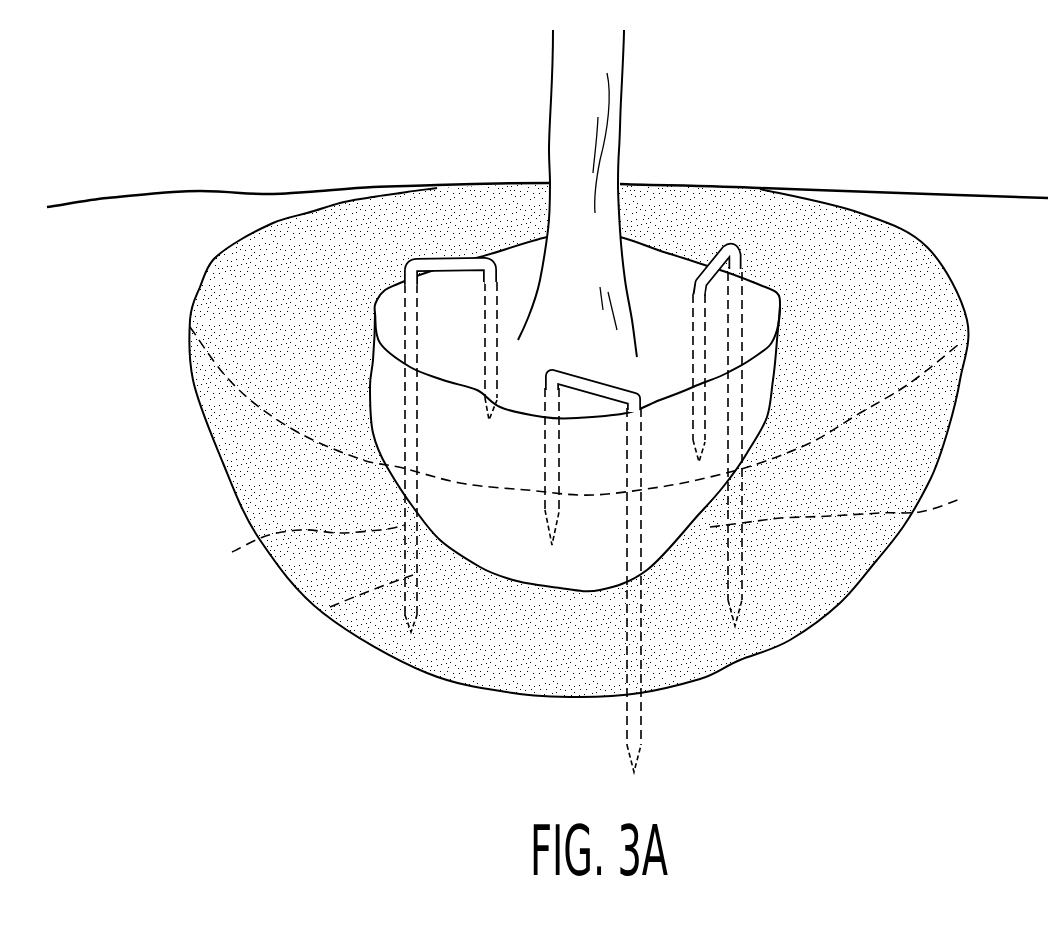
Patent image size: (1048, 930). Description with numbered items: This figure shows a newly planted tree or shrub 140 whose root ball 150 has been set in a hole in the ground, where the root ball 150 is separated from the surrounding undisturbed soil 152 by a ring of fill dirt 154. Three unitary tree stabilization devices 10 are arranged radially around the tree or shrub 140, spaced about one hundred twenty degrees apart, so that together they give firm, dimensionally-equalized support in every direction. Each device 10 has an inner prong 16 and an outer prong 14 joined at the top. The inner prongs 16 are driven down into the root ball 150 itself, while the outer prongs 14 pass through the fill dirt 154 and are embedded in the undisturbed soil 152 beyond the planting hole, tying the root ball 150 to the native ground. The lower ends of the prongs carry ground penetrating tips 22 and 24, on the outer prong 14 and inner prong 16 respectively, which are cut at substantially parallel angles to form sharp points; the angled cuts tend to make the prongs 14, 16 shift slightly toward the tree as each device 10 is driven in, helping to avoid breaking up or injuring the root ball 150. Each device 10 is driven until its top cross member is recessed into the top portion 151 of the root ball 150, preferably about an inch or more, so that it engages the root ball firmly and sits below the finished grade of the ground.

The unitary tree stabilization device 10 is at (445, 258).
The outer prong 14 is at (630, 770).
The inner prong 16 is at (484, 356).
The ground penetrating tip 22 is at (323, 614).
The ground penetrating tip 24 is at (492, 420).
The tree or shrub 140 is at (602, 55).
The root ball 150 is at (507, 556).
The top portion 151 is at (635, 257).
The undisturbed soil 152 is at (180, 222).
The fill dirt 154 is at (452, 643).